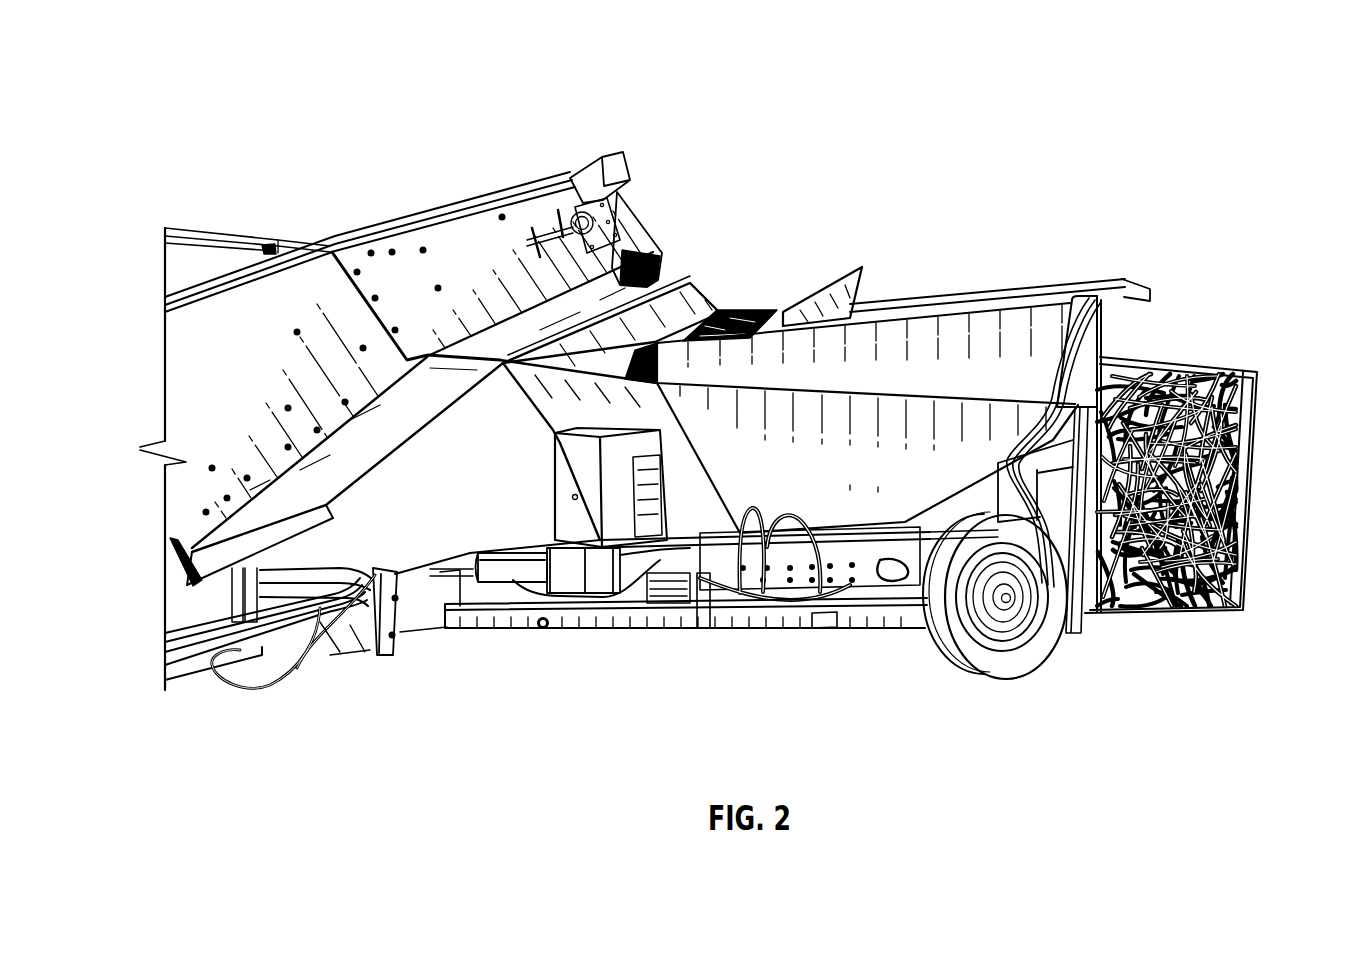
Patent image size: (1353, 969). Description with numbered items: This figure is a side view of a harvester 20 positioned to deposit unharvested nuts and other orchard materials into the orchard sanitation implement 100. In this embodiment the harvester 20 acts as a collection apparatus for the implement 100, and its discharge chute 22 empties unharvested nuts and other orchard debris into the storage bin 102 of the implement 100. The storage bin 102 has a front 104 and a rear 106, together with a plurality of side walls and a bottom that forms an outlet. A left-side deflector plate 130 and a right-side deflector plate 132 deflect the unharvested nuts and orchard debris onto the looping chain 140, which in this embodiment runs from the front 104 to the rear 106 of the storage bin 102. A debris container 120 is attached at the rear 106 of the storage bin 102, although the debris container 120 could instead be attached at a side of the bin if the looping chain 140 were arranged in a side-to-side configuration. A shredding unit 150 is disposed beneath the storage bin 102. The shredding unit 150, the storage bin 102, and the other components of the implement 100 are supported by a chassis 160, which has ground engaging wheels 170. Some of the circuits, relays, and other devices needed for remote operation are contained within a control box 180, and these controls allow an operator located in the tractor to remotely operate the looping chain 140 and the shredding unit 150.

The harvester 20 is at (565, 99).
The discharge chute 22 is at (636, 161).
The orchard sanitation implement 100 is at (1034, 128).
The storage bin 102 is at (958, 376).
The front 104 is at (540, 403).
The rear 106 is at (1094, 343).
The debris container 120 is at (1238, 557).
The left-side deflector plate 130 is at (853, 290).
The right-side deflector plate 132 is at (694, 298).
The looping chain 140 is at (750, 310).
The shredding unit 150 is at (808, 607).
The chassis 160 is at (497, 628).
The ground engaging wheels 170 is at (1025, 653).
The control box 180 is at (565, 487).